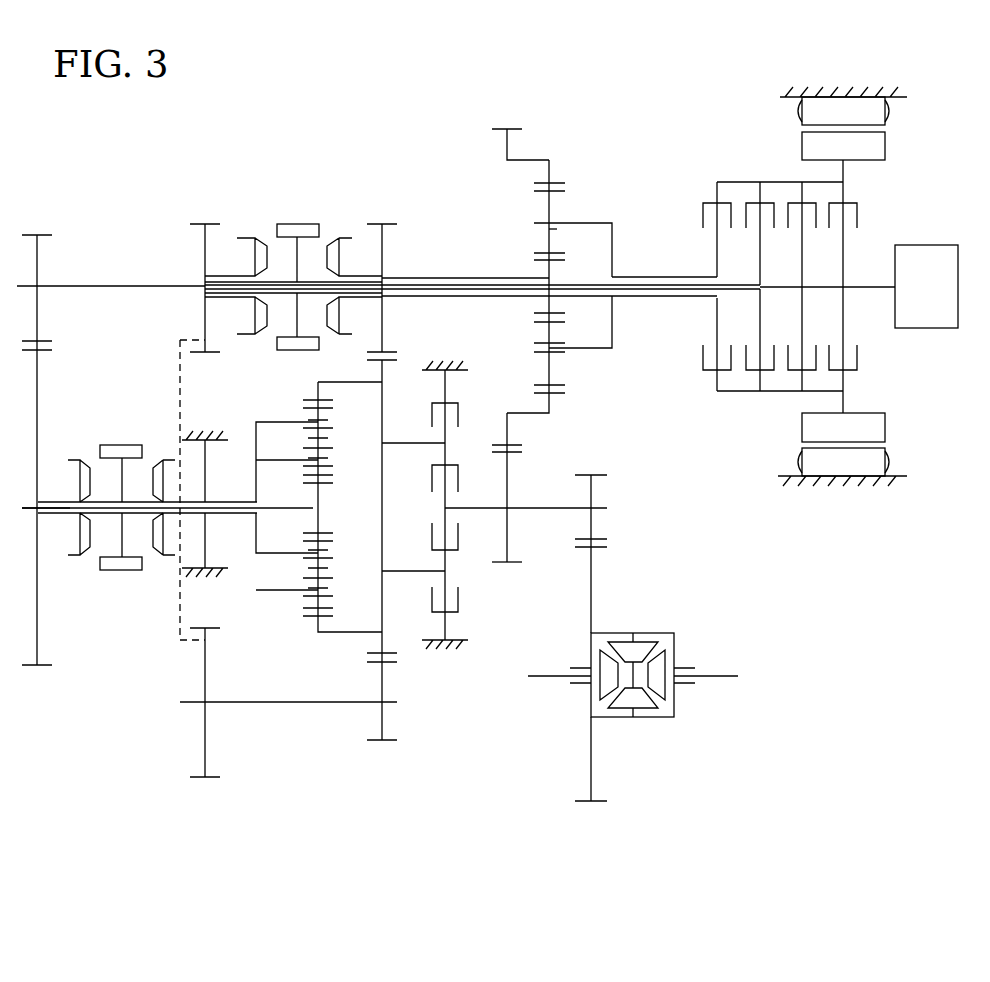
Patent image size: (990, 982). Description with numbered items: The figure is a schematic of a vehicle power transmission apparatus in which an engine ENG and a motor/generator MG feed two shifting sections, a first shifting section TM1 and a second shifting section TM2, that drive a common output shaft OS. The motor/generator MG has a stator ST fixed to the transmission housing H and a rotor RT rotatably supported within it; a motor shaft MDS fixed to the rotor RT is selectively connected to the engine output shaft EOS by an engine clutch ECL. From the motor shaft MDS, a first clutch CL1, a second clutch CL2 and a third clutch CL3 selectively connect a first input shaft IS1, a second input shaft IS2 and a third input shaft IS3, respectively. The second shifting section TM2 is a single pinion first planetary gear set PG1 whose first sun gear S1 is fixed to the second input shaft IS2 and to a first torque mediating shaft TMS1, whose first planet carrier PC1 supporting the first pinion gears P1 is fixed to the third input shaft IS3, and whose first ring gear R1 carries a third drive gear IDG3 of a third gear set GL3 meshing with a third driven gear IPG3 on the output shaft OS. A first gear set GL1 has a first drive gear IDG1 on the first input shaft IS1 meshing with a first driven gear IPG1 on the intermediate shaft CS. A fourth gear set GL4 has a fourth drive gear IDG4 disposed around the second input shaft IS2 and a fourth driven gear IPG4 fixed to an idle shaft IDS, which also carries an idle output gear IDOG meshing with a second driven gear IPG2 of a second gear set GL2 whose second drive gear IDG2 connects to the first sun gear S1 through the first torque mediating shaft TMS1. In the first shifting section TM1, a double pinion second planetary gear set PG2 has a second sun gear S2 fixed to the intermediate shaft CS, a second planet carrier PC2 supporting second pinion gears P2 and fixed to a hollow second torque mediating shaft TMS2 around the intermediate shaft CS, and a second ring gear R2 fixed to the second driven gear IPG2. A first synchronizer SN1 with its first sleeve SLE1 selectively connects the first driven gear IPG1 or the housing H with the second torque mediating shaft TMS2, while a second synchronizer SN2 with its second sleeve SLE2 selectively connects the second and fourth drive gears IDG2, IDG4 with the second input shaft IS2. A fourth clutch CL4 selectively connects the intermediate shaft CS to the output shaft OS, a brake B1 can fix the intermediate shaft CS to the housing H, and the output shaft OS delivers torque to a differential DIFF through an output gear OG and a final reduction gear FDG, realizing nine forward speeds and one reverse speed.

The first gear set GL1 is at (38, 220).
The first drive gear IDG1 is at (52, 254).
The first driven gear IPG1 is at (40, 430).
The first synchronizer SN1 is at (108, 419).
The first sleeve SLE1 is at (133, 445).
The intermediate shaft CS is at (228, 502).
The second torque mediating shaft TMS2 is at (230, 515).
The transmission housing H is at (204, 440).
The fourth gear set GL4 is at (205, 208).
The fourth drive gear IDG4 is at (205, 250).
The second synchronizer SN2 is at (286, 207).
The second sleeve SLE2 is at (310, 224).
The second gear set GL2 is at (380, 208).
The second drive gear IDG2 is at (397, 250).
The second driven gear IPG2 is at (385, 392).
The idle output gear IDOG is at (385, 712).
The second planetary gear set PG2 is at (329, 650).
The second ring gear R2 is at (316, 398).
The second pinion gears P2 is at (334, 451).
The second sun gear S2 is at (305, 486).
The second planet carrier PC2 is at (271, 458).
The brake B1 is at (474, 405).
The fourth clutch CL4 is at (418, 492).
The fourth driven gear IPG4 is at (205, 724).
The idle shaft IDS is at (278, 704).
The first input shaft IS1 is at (484, 290).
The first torque mediating shaft TMS1 is at (489, 276).
The third input shaft IS3 is at (657, 276).
The second input shaft IS2 is at (670, 297).
The third drive gear IDG3 is at (505, 151).
The first planetary gear set PG1 is at (568, 145).
The first ring gear R1 is at (560, 176).
The first planet carrier PC1 is at (592, 222).
The first pinion gears P1 is at (552, 241).
The first sun gear S1 is at (560, 258).
The third driven gear IPG3 is at (510, 466).
The third gear set GL3 is at (505, 590).
The output shaft OS is at (542, 510).
The output gear OG is at (592, 522).
The final reduction gear FDG is at (592, 575).
The differential DIFF is at (697, 717).
The third clutch CL3 is at (698, 192).
The second clutch CL2 is at (739, 192).
The first clutch CL1 is at (781, 192).
The engine clutch ECL is at (873, 214).
The motor shaft MDS is at (738, 395).
The stator ST is at (843, 286).
The rotor RT is at (843, 287).
The motor/generator MG is at (900, 105).
The engine ENG is at (926, 286).
The engine output shaft EOS is at (868, 290).
The first shifting section TM1 is at (402, 786).
The second shifting section TM2 is at (565, 93).